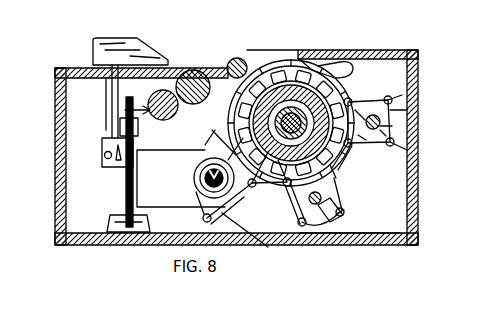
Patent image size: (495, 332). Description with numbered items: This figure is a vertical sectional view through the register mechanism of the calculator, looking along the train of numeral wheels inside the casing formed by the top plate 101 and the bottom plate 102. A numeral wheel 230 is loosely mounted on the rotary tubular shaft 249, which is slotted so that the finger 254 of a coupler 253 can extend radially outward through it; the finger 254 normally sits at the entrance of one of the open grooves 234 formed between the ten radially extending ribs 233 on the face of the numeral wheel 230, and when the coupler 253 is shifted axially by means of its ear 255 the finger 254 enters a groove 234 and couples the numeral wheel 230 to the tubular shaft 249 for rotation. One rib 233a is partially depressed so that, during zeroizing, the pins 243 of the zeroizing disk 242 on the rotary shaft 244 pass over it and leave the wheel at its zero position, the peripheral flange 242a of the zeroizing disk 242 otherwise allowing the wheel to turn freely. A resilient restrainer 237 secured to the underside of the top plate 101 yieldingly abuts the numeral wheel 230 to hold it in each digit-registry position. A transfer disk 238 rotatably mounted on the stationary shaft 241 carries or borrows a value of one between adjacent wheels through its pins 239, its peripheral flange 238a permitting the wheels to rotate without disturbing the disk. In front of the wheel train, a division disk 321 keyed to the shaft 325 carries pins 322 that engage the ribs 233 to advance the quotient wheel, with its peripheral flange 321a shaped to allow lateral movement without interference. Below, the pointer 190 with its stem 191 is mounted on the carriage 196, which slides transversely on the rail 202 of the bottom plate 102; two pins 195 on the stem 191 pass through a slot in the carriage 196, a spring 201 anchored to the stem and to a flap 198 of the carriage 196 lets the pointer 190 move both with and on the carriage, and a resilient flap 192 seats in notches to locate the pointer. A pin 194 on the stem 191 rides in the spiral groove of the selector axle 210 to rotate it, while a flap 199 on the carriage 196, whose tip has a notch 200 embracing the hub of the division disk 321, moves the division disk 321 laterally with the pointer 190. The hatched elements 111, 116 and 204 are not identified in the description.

The top plate 101 is at (352, 51).
The bottom plate 102 is at (368, 244).
The roller 111 is at (192, 70).
The roller 116 is at (233, 60).
The pointer 190 is at (100, 52).
The stem 191 is at (112, 113).
The resilient flap 192 is at (112, 93).
The pin 194 is at (143, 108).
The pins 195 is at (118, 131).
The carriage 196 is at (126, 197).
The flap 198 is at (103, 147).
The flap 199 is at (150, 222).
The notch 200 is at (196, 170).
The spring 201 is at (105, 158).
The rail 202 is at (108, 223).
The roller 204 is at (181, 70).
The selector axle 210 is at (181, 170).
The numeral wheel 230 is at (288, 66).
The ribs 233 is at (350, 147).
The partially depressed rib 233a is at (372, 98).
The open grooves 234 is at (336, 168).
The resilient restrainer 237 is at (354, 74).
The transfer disk 238 is at (325, 213).
The peripheral flange 238a is at (343, 198).
The pins 239 is at (345, 213).
The stationary shaft 241 is at (284, 208).
The zeroizing disk 242 is at (413, 152).
The peripheral flange 242a is at (410, 111).
The pins 243 is at (392, 107).
The rotary shaft 244 is at (393, 126).
The tubular shaft 249 is at (272, 179).
The coupler 253 is at (227, 203).
The finger 254 is at (292, 108).
The ear 255 is at (282, 100).
The division disk 321 is at (212, 131).
The peripheral flange 321a is at (268, 247).
The pins 322 is at (215, 126).
The shaft 325 is at (200, 184).